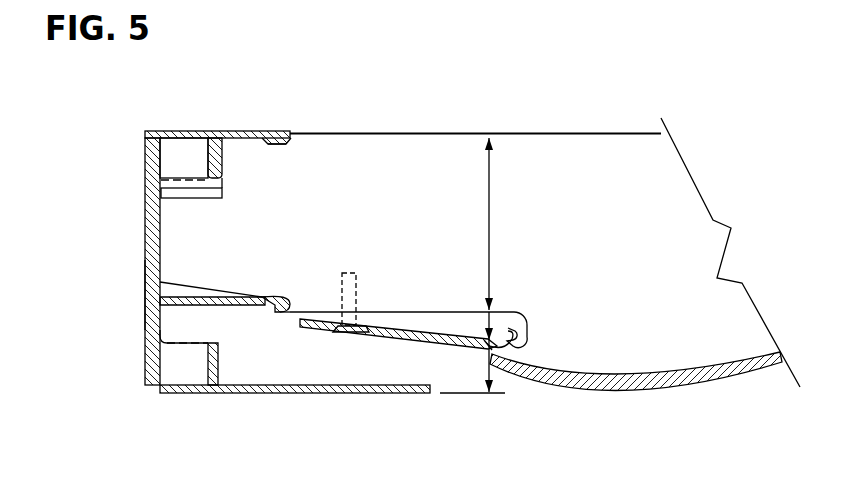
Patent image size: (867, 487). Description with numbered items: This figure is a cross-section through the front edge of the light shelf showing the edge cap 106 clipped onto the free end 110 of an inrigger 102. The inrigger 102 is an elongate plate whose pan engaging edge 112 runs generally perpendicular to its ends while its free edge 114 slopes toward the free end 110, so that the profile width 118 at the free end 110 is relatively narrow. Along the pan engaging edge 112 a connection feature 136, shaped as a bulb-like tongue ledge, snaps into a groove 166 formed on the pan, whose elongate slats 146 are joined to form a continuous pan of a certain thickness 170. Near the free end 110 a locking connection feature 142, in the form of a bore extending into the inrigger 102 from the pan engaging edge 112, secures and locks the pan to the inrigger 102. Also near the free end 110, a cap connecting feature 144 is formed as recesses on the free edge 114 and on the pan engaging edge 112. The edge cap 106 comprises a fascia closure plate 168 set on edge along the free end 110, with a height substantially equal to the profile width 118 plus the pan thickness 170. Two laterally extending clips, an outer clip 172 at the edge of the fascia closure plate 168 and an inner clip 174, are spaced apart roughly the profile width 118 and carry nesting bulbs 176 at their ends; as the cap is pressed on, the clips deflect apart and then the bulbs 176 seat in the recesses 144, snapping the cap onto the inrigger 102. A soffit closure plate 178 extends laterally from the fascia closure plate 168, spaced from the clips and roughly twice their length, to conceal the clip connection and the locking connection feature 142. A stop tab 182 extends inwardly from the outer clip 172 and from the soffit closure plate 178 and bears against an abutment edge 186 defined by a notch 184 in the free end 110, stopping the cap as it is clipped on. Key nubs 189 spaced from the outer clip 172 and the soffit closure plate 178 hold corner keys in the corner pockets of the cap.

The inrigger 102 is at (598, 83).
The edge cap 106 is at (135, 378).
The free end 110 is at (178, 238).
The pan engaging edge 112 is at (433, 317).
The free edge 114 is at (398, 133).
The profile width 118 is at (489, 228).
The connection feature 136 is at (510, 348).
The locking connection feature 142 is at (357, 282).
The cap connecting feature 144 is at (287, 145).
The elongate slat 146 is at (633, 393).
The groove 166 is at (490, 342).
The fascia closure plate 168 is at (147, 284).
The thickness of the pan profile 170 is at (491, 346).
The outer clip 172 is at (230, 131).
The inner clip 174 is at (218, 296).
The nesting bulb 176 is at (282, 139).
The soffit closure plate 178 is at (272, 392).
The stop tab 182 is at (210, 148).
The notch 184 is at (170, 203).
The abutment edge 186 is at (222, 188).
The key nub 189 is at (165, 186).